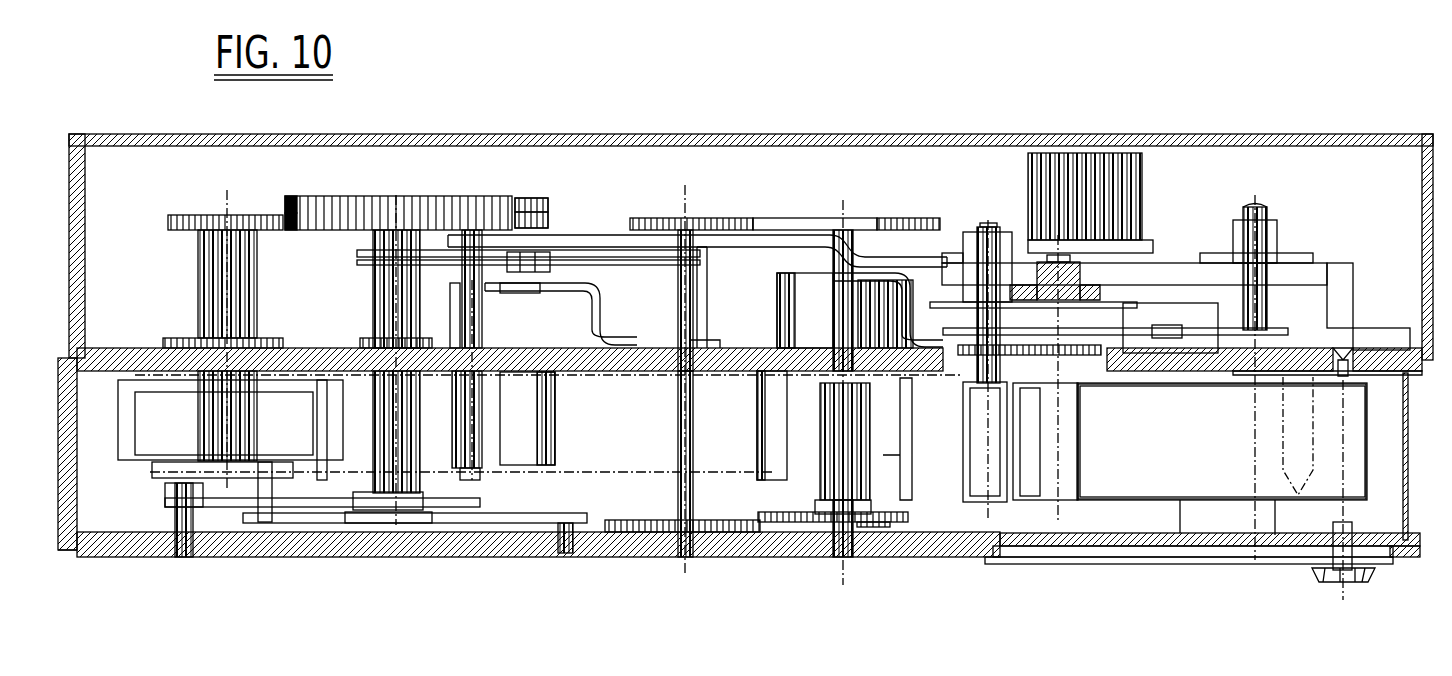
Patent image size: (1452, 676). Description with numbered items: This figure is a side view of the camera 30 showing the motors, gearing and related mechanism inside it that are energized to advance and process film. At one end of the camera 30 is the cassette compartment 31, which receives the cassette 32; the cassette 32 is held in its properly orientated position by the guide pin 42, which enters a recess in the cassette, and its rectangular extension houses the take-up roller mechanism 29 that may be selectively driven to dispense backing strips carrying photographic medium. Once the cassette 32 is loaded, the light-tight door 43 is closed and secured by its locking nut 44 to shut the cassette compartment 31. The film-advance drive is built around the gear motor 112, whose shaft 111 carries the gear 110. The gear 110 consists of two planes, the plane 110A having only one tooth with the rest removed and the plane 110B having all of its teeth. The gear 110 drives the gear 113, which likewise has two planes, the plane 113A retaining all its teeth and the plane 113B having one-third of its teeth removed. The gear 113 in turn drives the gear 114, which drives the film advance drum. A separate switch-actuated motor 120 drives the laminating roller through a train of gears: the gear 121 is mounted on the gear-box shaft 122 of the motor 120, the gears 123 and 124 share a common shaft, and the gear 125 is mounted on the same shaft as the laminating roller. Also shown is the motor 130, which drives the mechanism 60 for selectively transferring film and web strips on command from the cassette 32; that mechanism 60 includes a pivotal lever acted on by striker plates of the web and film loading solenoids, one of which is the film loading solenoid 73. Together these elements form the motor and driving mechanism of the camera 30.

The camera 30 is at (1373, 93).
The cassette compartment 31 is at (1368, 425).
The take-up roller mechanism 29 is at (1086, 410).
The cassette 32 is at (1108, 492).
The guide pin 42 is at (1283, 443).
The light-tight door 43 is at (1180, 568).
The locking nut 44 is at (1336, 595).
The loading mechanism 60 is at (952, 460).
The film loading solenoid 73 is at (1190, 312).
The gear 110 is at (532, 190).
The plane of gear 110 110A is at (551, 205).
The plane of gear 110 110B is at (552, 207).
The shaft 111 is at (372, 304).
The gear motor 112 is at (547, 423).
The gear 113 is at (360, 207).
The plane of gear 113 113A is at (282, 203).
The plane of gear 113 113B is at (292, 226).
The gear 114 is at (183, 216).
The motor 120 is at (797, 312).
The gear 121 is at (828, 226).
The gear-box shaft 122 is at (878, 240).
The gear 123 is at (724, 212).
The gear 124 is at (625, 535).
The gear 125 is at (752, 535).
The motor 130 is at (1122, 165).